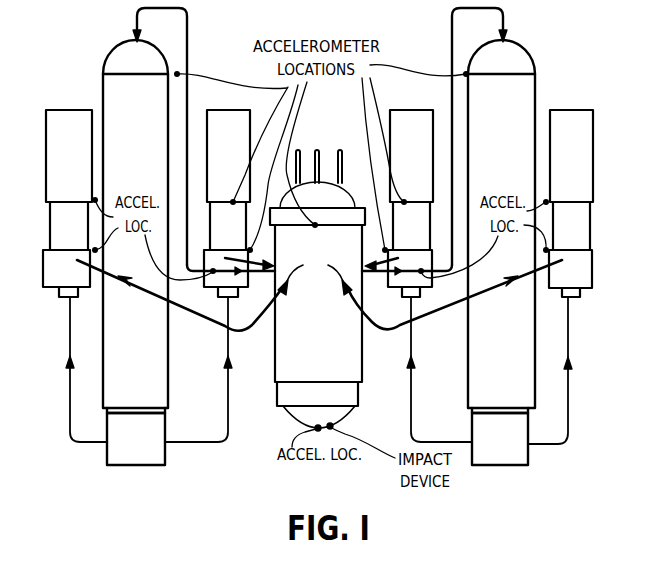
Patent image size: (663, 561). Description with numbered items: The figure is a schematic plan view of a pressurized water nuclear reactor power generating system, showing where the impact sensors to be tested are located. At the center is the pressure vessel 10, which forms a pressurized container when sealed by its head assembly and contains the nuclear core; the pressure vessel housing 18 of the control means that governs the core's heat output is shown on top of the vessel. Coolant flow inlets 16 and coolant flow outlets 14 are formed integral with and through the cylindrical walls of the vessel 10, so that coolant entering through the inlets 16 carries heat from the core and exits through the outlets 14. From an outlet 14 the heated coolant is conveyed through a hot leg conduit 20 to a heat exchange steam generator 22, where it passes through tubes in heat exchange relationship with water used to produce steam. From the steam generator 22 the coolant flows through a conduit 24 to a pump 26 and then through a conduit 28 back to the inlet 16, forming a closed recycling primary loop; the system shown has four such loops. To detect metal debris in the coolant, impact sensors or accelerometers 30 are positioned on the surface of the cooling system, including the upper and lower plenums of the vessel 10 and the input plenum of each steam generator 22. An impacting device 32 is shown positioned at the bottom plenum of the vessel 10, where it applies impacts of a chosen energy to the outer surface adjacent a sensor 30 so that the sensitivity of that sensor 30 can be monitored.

The pressure vessel 10 is at (352, 373).
The coolant flow outlets 14 is at (262, 274).
The coolant flow inlets 16 is at (342, 290).
The pressure vessel housing of the control means 18 is at (340, 153).
The hot leg conduit 20 is at (452, 148).
The heat exchange steam generator 22 is at (526, 64).
The conduit 24 is at (570, 395).
The pump 26 is at (585, 228).
The conduit 28 is at (413, 350).
The impact sensors or accelerometers 30 is at (313, 424).
The impacting device 32 is at (335, 425).